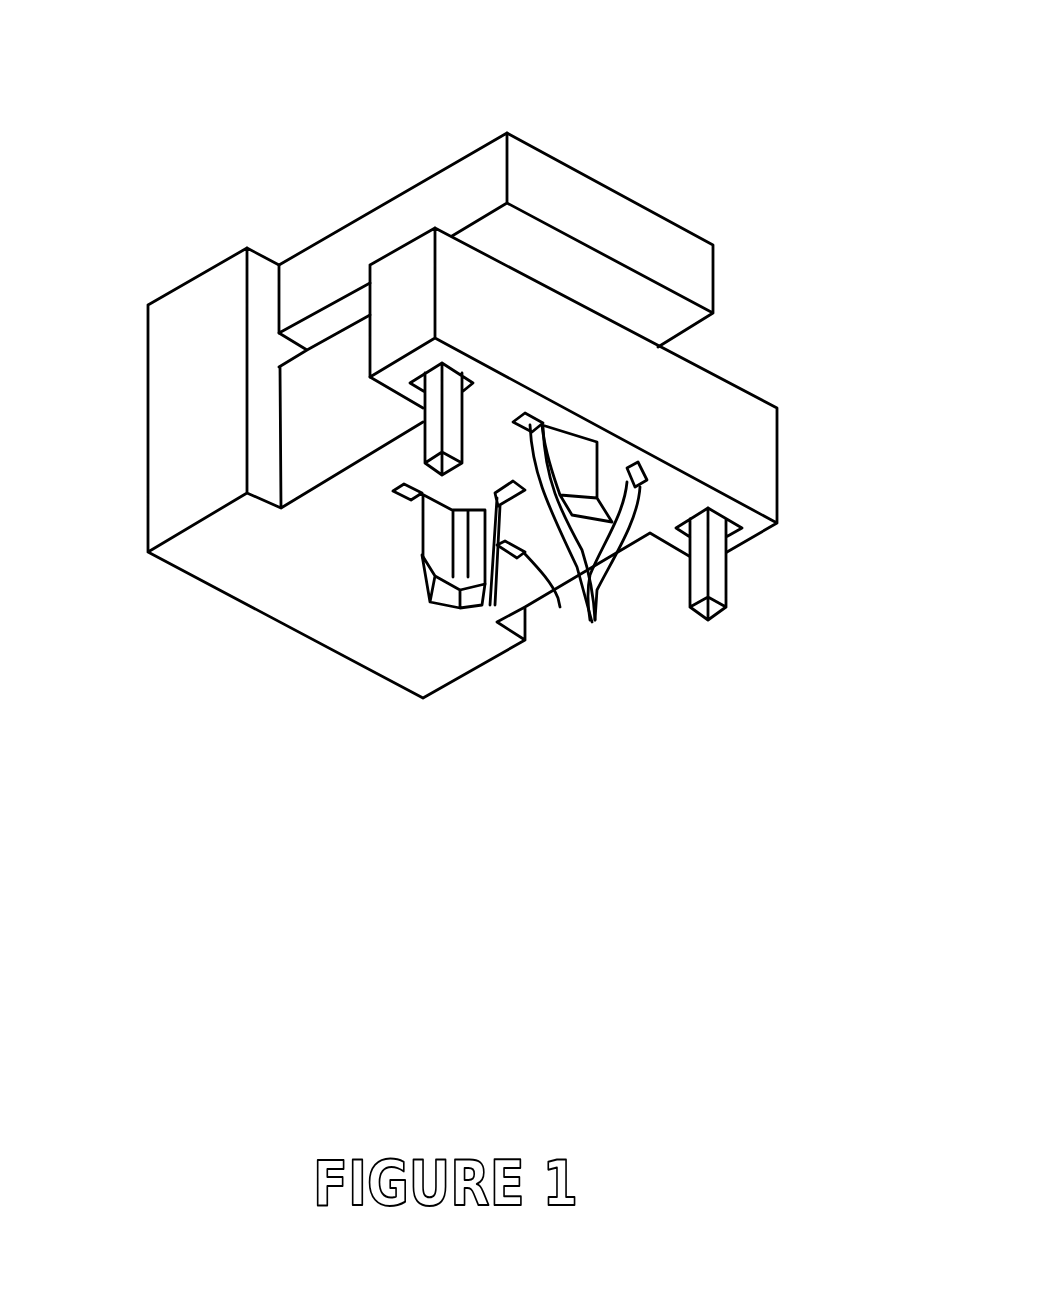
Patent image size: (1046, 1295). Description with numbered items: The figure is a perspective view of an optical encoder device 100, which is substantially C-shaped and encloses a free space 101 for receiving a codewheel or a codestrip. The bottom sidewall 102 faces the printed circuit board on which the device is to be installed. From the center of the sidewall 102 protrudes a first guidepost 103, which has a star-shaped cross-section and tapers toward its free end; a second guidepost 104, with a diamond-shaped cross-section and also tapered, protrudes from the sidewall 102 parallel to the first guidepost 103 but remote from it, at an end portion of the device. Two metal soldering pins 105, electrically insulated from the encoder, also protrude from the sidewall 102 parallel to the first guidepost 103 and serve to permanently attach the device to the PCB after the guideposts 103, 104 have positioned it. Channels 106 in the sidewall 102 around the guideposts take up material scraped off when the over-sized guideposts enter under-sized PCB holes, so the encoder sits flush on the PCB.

The optical encoder device 100 is at (697, 119).
The free space 101 is at (653, 308).
The bottom sidewall 102 is at (218, 560).
The first guidepost 103 is at (458, 583).
The second guidepost 104 is at (577, 475).
The soldering pins 105 is at (433, 442).
The channels 106 is at (403, 498).